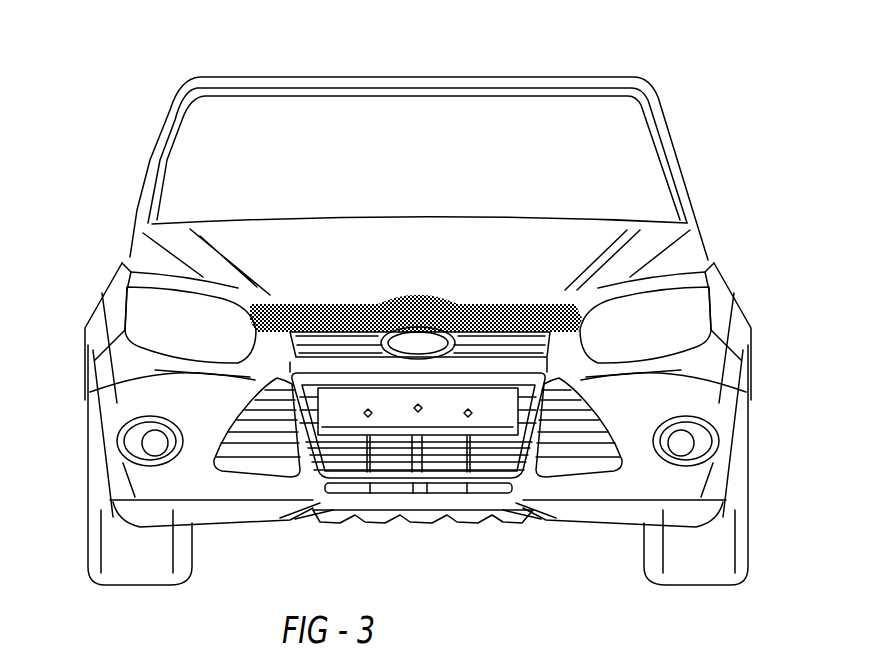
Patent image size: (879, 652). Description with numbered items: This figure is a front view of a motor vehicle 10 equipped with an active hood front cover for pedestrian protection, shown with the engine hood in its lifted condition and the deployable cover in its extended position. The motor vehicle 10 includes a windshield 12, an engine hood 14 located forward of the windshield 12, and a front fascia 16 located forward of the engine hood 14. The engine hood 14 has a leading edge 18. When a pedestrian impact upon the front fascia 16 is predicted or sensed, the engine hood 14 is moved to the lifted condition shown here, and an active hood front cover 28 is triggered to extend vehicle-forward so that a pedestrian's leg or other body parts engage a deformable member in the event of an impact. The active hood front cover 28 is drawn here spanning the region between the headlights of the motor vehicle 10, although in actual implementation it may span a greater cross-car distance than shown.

The motor vehicle 10 is at (131, 69).
The windshield 12 is at (620, 155).
The engine hood 14 is at (575, 250).
The front fascia 16 is at (502, 502).
The leading edge 18 is at (385, 295).
The active hood front cover 28 is at (345, 318).